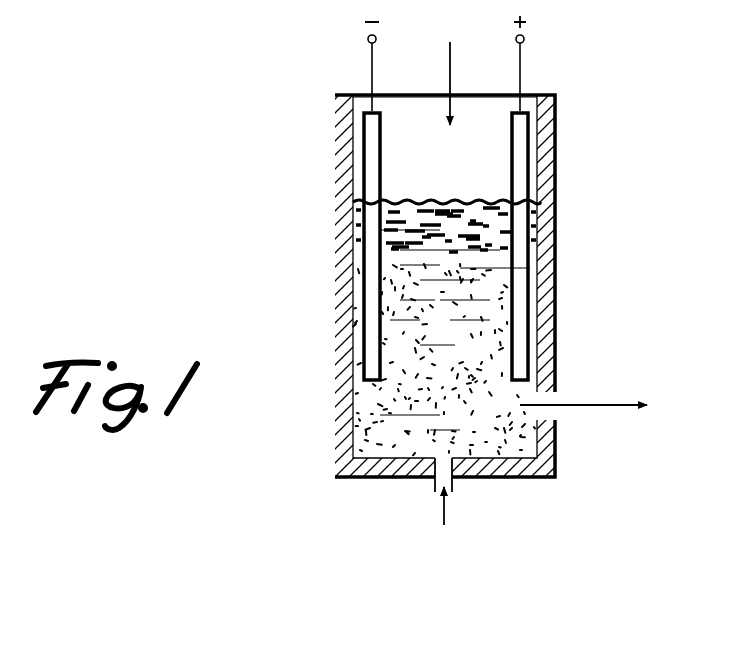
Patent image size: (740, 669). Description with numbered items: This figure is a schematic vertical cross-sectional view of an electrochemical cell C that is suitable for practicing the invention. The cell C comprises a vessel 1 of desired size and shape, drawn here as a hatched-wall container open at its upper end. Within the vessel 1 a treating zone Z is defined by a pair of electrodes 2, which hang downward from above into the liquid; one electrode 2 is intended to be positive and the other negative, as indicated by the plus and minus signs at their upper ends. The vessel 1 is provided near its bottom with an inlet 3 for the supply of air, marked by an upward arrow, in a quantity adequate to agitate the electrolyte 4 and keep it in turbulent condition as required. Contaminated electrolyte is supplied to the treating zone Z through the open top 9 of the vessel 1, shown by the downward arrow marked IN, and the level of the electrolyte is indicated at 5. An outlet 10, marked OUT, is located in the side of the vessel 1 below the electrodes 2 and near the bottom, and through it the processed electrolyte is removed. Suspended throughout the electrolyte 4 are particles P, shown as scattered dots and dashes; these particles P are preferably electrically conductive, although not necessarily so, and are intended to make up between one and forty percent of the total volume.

The vessel 1 is at (550, 233).
The electrodes 2 is at (363, 300).
The inlet 3 is at (447, 515).
The electrolyte 4 is at (398, 252).
The level of the electrolyte 5 is at (493, 203).
The open top 9 is at (450, 66).
The outlet 10 is at (595, 408).
The electrochemical cell C is at (482, 280).
The treating zone Z is at (413, 336).
The particles P is at (378, 410).